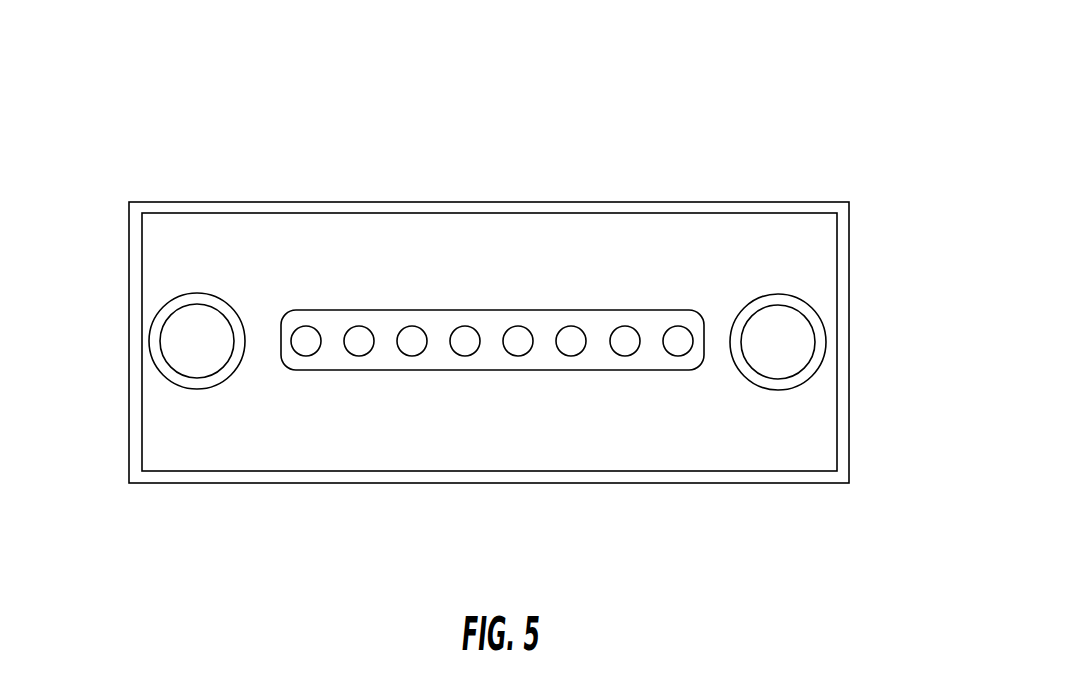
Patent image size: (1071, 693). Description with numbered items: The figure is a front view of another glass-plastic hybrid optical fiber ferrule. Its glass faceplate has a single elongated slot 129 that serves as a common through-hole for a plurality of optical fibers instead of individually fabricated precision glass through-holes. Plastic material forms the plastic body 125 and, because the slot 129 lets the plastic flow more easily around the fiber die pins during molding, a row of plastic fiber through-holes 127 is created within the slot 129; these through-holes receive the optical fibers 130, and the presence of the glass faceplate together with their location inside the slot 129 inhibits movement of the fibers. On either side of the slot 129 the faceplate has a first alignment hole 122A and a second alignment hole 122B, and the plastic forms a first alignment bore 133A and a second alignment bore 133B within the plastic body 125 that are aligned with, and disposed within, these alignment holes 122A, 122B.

The first alignment hole 122A is at (202, 337).
The second alignment hole 122B is at (793, 343).
The plastic body 125 is at (172, 385).
The fiber through-holes 127 is at (571, 340).
The slot 129 is at (668, 371).
The optical fibers 130 is at (305, 345).
The first alignment bore 133A is at (167, 312).
The second alignment bore 133B is at (807, 313).